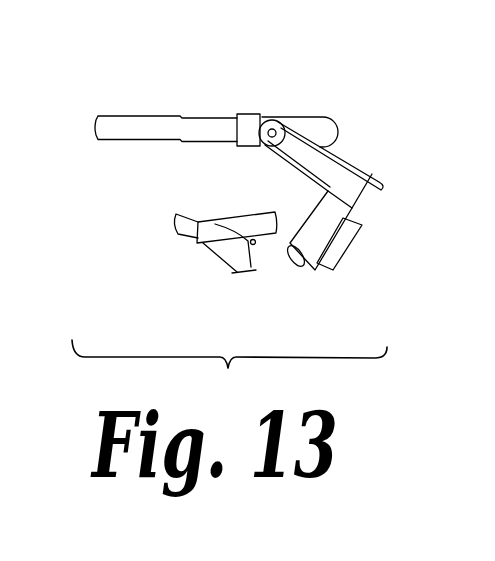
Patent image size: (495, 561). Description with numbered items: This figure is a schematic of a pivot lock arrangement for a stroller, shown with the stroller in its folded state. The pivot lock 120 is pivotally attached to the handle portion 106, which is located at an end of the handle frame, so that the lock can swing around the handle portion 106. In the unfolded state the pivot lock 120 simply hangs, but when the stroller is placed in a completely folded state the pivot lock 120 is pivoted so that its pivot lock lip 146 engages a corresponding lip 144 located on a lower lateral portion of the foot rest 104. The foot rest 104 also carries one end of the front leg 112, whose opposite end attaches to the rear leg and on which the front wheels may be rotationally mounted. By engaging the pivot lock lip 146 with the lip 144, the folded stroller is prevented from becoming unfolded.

The foot rest 104 is at (257, 213).
The handle portion 106 is at (327, 121).
The front leg 112 is at (177, 234).
The pivot lock 120 is at (362, 174).
The lip 144 is at (257, 271).
The pivot lock lip 146 is at (305, 268).